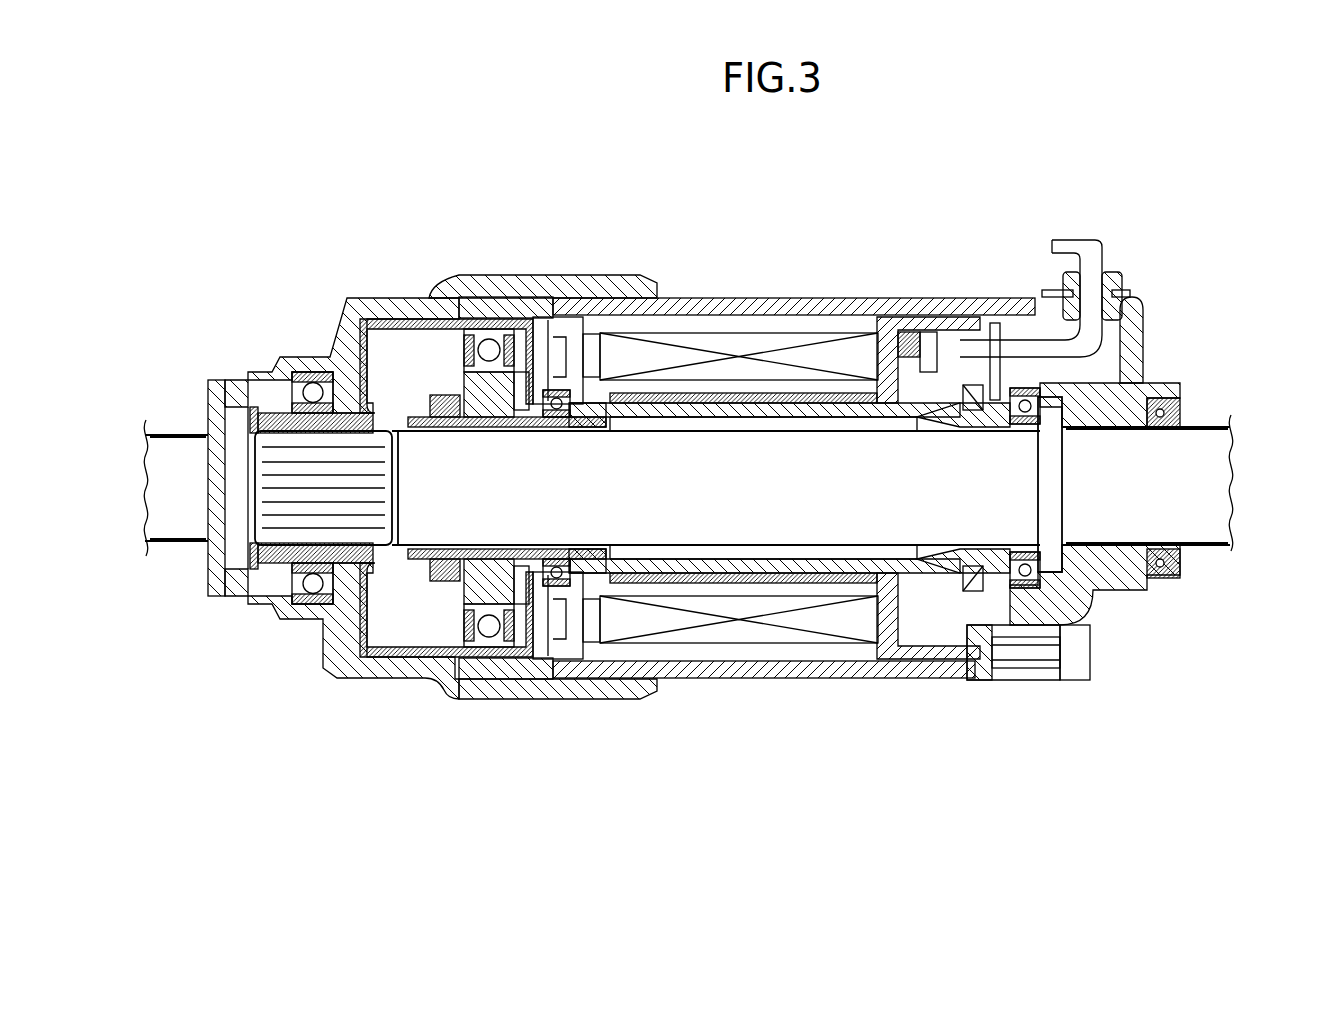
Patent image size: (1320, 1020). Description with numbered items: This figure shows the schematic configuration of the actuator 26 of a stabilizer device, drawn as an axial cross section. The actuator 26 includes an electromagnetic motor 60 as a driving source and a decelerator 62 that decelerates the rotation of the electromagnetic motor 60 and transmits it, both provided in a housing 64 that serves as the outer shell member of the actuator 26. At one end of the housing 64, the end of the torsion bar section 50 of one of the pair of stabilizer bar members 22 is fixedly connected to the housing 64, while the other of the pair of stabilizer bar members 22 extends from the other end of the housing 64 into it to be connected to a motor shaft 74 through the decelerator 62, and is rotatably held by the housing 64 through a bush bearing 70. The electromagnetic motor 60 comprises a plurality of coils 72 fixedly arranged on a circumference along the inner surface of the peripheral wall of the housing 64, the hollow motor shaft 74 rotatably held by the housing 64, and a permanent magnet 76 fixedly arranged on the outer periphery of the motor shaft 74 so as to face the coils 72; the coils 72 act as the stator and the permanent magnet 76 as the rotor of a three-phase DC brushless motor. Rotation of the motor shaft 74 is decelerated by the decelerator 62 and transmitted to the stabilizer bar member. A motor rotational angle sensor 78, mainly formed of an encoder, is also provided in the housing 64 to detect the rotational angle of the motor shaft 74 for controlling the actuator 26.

The stabilizer bar members 22 is at (185, 386).
The actuator 26 is at (806, 200).
The torsion bar section 50 is at (172, 528).
The electromagnetic motor 60 is at (910, 640).
The decelerator 62 is at (418, 356).
The housing 64 is at (709, 266).
The bush bearing 70 is at (1117, 556).
The coils 72 is at (737, 634).
The motor shaft 74 is at (944, 562).
The permanent magnet 76 is at (817, 396).
The motor rotational angle sensor 78 is at (975, 362).